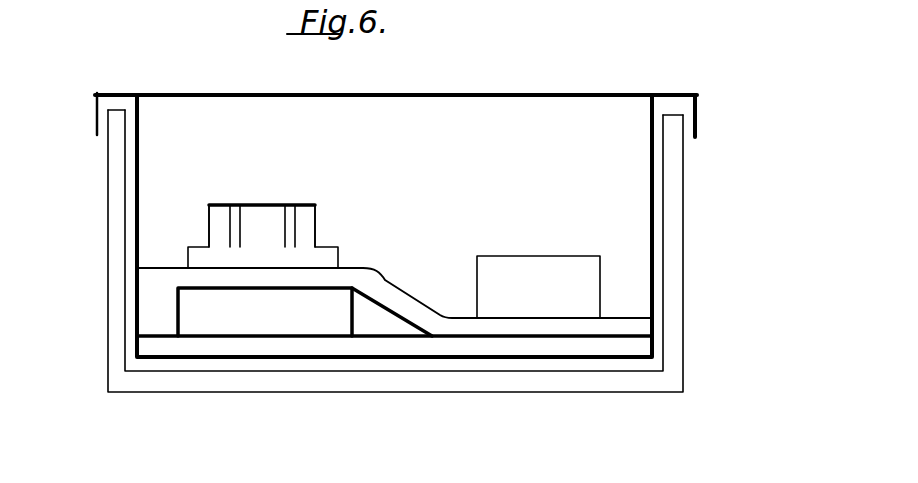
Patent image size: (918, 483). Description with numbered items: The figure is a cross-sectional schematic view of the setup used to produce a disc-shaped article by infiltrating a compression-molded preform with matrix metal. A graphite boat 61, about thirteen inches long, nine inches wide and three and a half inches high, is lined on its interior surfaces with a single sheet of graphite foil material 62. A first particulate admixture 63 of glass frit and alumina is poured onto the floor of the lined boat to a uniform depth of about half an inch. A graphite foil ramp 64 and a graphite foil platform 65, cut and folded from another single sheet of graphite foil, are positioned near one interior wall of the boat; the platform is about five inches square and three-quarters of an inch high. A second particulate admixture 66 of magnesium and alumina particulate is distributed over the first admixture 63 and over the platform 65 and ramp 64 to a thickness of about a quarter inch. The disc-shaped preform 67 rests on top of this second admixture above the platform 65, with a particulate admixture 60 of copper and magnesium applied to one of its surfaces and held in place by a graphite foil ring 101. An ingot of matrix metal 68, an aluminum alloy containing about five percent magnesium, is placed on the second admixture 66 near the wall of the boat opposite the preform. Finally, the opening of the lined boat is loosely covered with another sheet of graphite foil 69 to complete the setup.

The particulate admixture 60 is at (288, 222).
The graphite boat 61 is at (668, 382).
The graphite foil material 62 is at (140, 168).
The particulate admixture 63 is at (158, 344).
The graphite foil ramp 64 is at (390, 312).
The graphite foil platform 65 is at (213, 290).
The second particulate admixture 66 is at (630, 328).
The disc-shaped preform 67 is at (217, 225).
The ingot of matrix metal 68 is at (573, 283).
The sheet of graphite foil 69 is at (698, 122).
The graphite foil ring 101 is at (238, 223).